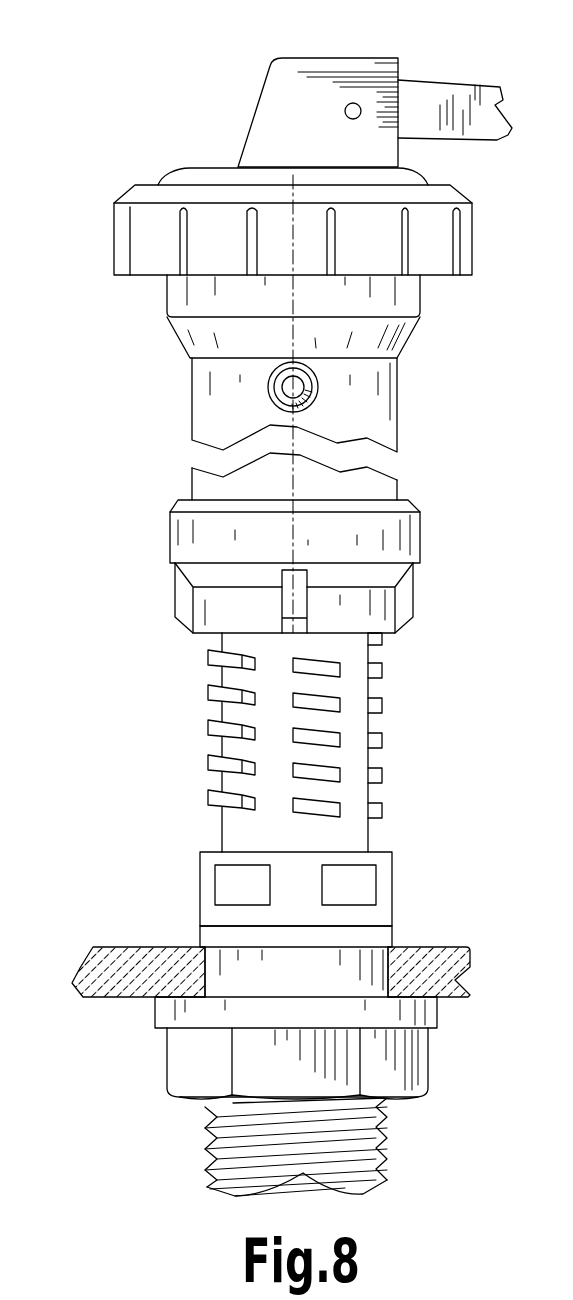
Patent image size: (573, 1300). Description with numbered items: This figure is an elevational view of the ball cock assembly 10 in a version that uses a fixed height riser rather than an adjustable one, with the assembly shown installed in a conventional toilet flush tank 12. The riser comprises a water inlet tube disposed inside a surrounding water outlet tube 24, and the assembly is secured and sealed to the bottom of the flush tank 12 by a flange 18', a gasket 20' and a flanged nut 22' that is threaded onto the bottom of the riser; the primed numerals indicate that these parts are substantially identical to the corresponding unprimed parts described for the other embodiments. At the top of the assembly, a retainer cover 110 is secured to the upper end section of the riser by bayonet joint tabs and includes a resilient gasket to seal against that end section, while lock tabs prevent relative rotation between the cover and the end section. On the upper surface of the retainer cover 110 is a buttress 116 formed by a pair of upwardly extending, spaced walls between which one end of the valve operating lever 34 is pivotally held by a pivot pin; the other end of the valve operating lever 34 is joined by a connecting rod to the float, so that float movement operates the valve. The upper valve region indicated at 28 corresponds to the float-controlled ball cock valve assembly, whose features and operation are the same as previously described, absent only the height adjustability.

The ball cock assembly 10 is at (135, 441).
The flush tank 12 is at (433, 968).
The flange 18' is at (347, 870).
The gasket 20' is at (341, 944).
The flanged nut 22' is at (329, 1096).
The water outlet tube 24 is at (370, 842).
The cap assembly 28 is at (100, 251).
The valve operating lever 34 is at (450, 112).
The retainer cover 110 is at (152, 232).
The buttress 116 is at (283, 115).